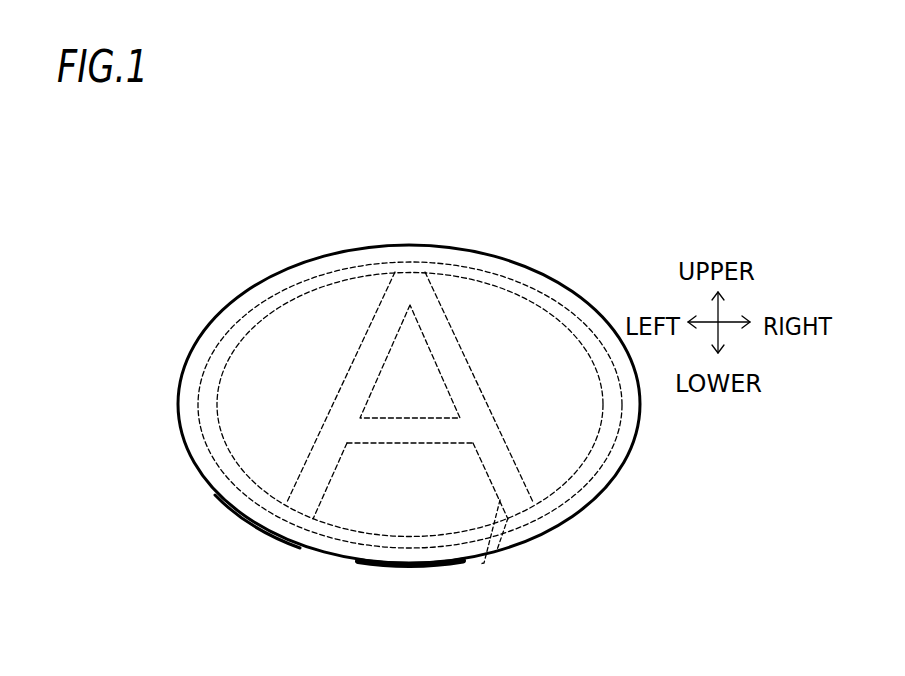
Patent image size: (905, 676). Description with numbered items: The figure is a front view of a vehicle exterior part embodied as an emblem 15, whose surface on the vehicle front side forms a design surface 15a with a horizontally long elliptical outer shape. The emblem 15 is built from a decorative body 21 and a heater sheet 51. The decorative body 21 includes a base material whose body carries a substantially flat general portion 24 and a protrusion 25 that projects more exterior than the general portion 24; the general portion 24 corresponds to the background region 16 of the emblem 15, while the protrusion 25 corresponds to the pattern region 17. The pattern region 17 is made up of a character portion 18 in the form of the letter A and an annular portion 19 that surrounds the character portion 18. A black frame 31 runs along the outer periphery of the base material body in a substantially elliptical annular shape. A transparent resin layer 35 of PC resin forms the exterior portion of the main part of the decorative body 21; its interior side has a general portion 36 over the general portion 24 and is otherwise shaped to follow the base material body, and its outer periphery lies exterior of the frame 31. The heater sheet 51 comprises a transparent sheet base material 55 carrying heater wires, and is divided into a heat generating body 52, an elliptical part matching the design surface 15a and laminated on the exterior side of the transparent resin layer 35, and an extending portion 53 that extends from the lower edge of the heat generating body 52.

The emblem 15 is at (182, 316).
The design surface 15a is at (540, 320).
The background region 16 is at (485, 405).
The pattern region 17 is at (418, 170).
The character portion 18 is at (445, 302).
The annular portion 19 is at (485, 270).
The decorative body 21 is at (460, 404).
The general portion 24 is at (485, 405).
The protrusion 25 is at (480, 564).
The frame 31 is at (585, 507).
The transparent resin layer 35 is at (460, 404).
The general portion 36 is at (563, 467).
The heater sheet 51 is at (384, 582).
The heat generating body 52 is at (345, 506).
The extending portion 53 is at (388, 567).
The sheet base material 55 is at (262, 512).